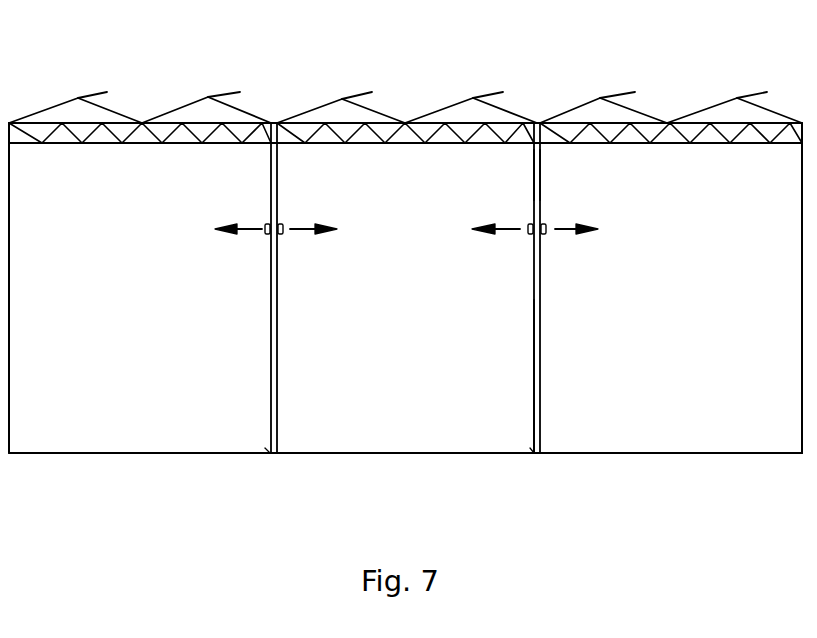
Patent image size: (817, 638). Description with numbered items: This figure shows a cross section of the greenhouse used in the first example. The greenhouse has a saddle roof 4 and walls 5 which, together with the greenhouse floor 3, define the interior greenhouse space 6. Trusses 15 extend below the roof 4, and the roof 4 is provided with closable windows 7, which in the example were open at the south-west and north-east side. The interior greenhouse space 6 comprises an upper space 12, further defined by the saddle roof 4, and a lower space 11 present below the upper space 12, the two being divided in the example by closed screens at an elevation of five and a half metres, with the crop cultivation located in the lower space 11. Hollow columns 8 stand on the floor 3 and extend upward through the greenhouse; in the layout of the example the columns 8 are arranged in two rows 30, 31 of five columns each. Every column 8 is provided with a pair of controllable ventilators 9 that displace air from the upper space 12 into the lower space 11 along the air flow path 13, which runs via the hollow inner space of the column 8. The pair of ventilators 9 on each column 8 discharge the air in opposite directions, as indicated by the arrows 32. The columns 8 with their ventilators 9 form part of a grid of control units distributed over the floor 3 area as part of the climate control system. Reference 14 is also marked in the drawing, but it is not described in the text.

The greenhouse floor 3 is at (653, 455).
The saddle roof 4 is at (427, 118).
The walls 5 is at (800, 347).
The interior greenhouse space 6 is at (142, 408).
The closable windows 7 is at (364, 93).
The hollow column 8 is at (273, 367).
The ventilator 9 is at (528, 225).
The lower space 11 is at (723, 410).
The upper space 12 is at (323, 116).
The air flow path 13 is at (537, 168).
The door leaf 14 is at (533, 390).
The trusses 15 is at (707, 143).
The row of columns 30 is at (265, 450).
The row of columns 31 is at (532, 450).
The arrows 32 is at (249, 228).